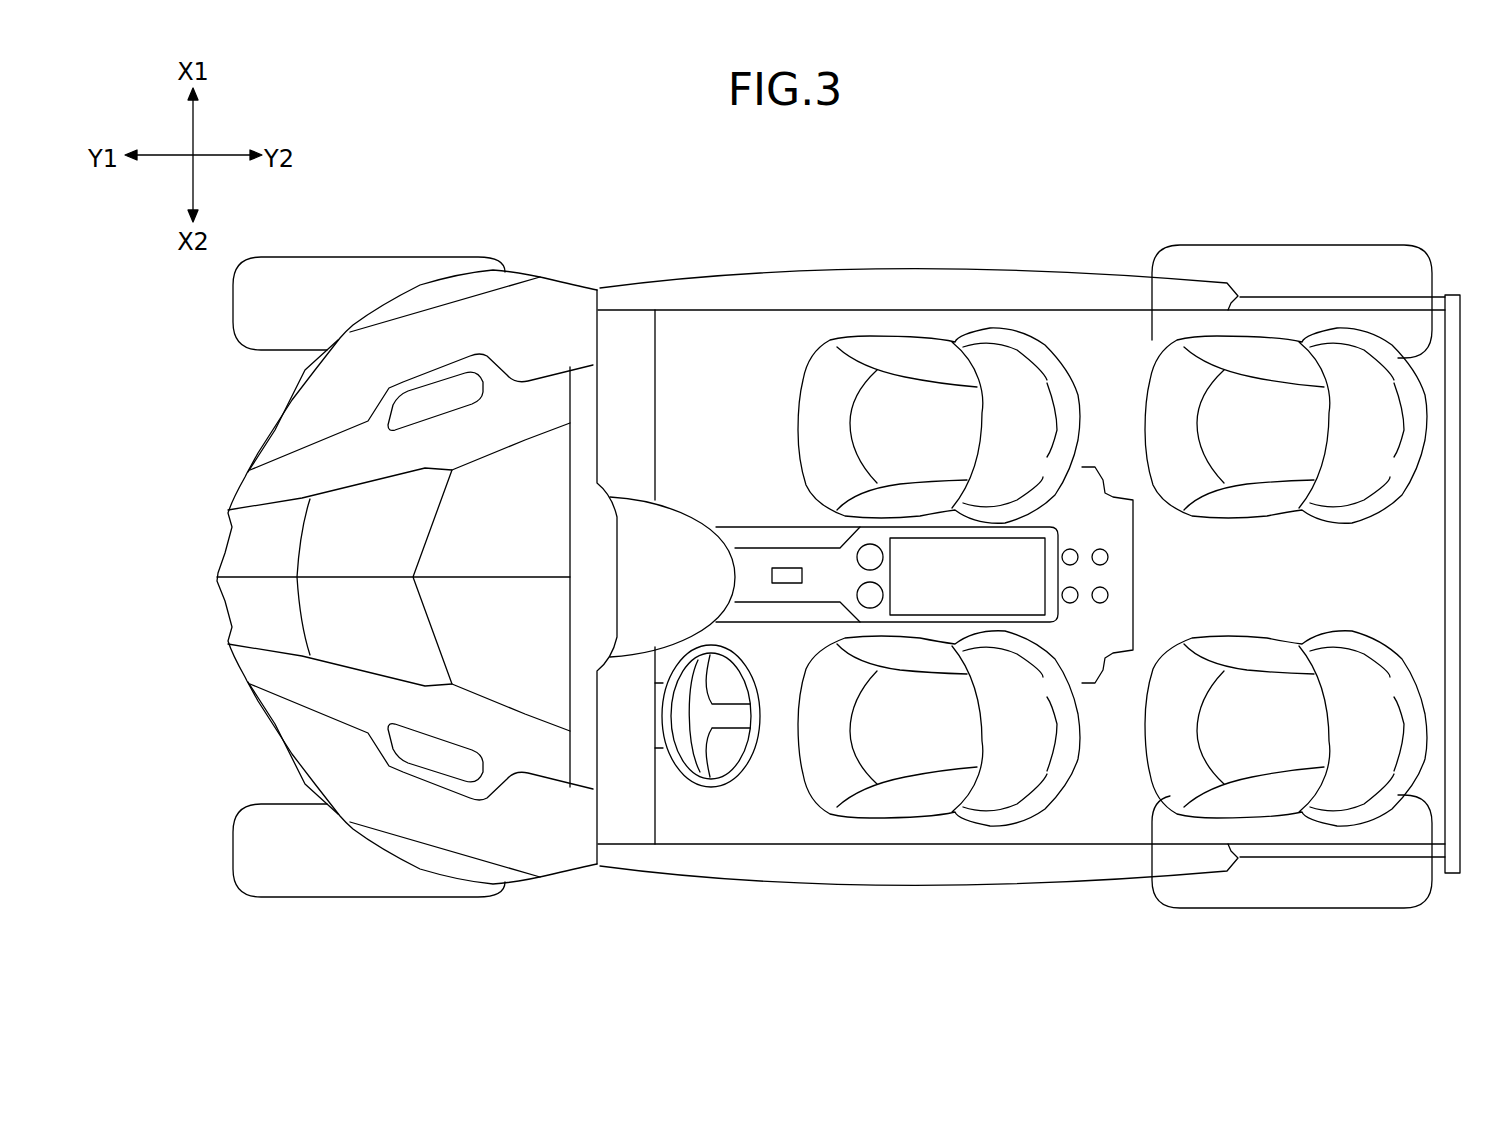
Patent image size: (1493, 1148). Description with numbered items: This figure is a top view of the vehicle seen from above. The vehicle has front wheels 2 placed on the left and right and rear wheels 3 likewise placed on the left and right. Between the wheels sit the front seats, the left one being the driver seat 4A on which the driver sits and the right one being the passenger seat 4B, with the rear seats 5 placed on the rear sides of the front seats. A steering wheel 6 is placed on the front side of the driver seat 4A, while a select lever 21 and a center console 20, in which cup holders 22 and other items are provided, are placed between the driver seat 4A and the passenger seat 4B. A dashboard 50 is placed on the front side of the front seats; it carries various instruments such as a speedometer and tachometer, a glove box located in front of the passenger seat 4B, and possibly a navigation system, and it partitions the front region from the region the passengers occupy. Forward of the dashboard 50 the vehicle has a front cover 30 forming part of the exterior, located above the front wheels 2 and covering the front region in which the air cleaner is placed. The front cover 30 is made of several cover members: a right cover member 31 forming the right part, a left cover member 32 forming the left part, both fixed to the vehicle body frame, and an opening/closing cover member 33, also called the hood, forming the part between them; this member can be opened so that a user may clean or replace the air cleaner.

The front wheel 2 is at (358, 256).
The rear wheel 3 is at (1364, 245).
The driver seat 4A is at (910, 818).
The passenger seat 4B is at (860, 334).
The rear seat 5 is at (1257, 337).
The steering wheel 6 is at (725, 788).
The center console 20 is at (738, 525).
The select lever 21 is at (787, 563).
The cup holder 22 is at (858, 552).
The front cover 30 is at (250, 452).
The right cover member 31 is at (330, 403).
The left cover member 32 is at (330, 742).
The opening/closing cover member 33 is at (337, 530).
The dashboard 50 is at (630, 802).